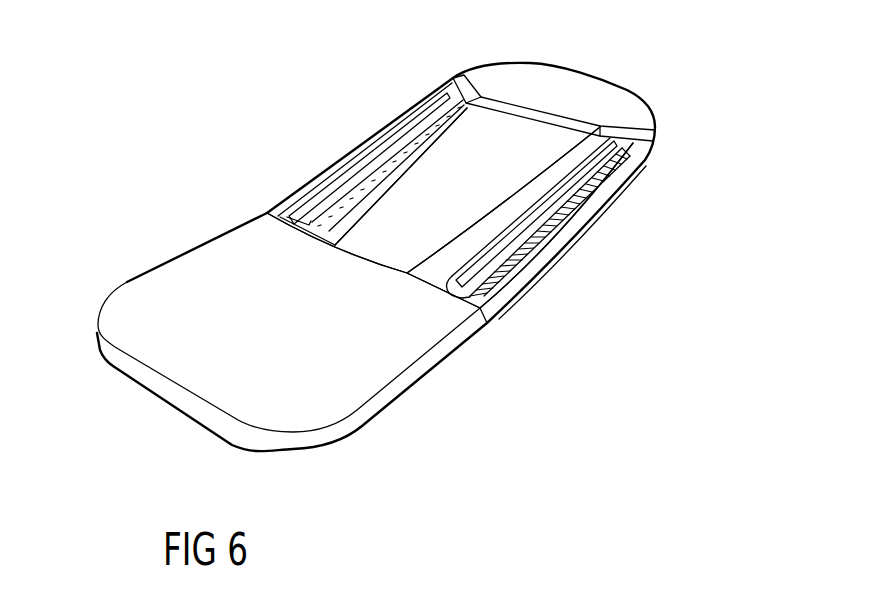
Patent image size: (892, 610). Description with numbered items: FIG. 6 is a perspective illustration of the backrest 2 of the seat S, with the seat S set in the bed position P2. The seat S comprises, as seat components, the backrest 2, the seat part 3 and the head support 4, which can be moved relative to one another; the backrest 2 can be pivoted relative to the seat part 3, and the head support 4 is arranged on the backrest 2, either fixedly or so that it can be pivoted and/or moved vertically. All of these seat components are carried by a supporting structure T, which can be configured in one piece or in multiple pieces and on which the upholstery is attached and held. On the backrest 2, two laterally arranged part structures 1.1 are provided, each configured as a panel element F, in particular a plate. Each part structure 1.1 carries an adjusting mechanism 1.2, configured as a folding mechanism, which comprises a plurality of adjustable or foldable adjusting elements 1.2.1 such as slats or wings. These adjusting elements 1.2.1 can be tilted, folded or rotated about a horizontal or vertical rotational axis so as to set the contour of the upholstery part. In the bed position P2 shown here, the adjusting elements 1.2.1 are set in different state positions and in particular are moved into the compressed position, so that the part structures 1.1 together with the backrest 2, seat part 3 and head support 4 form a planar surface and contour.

The part structure 1.1 is at (392, 127).
The panel element F is at (467, 171).
The adjusting mechanism 1.2 is at (339, 186).
The adjusting elements 1.2.1 is at (597, 190).
The backrest 2 is at (463, 137).
The seat part 3 is at (145, 300).
The head support 4 is at (578, 97).
The seat S is at (665, 95).
The supporting structure T is at (520, 287).
The bed position P2 is at (172, 233).